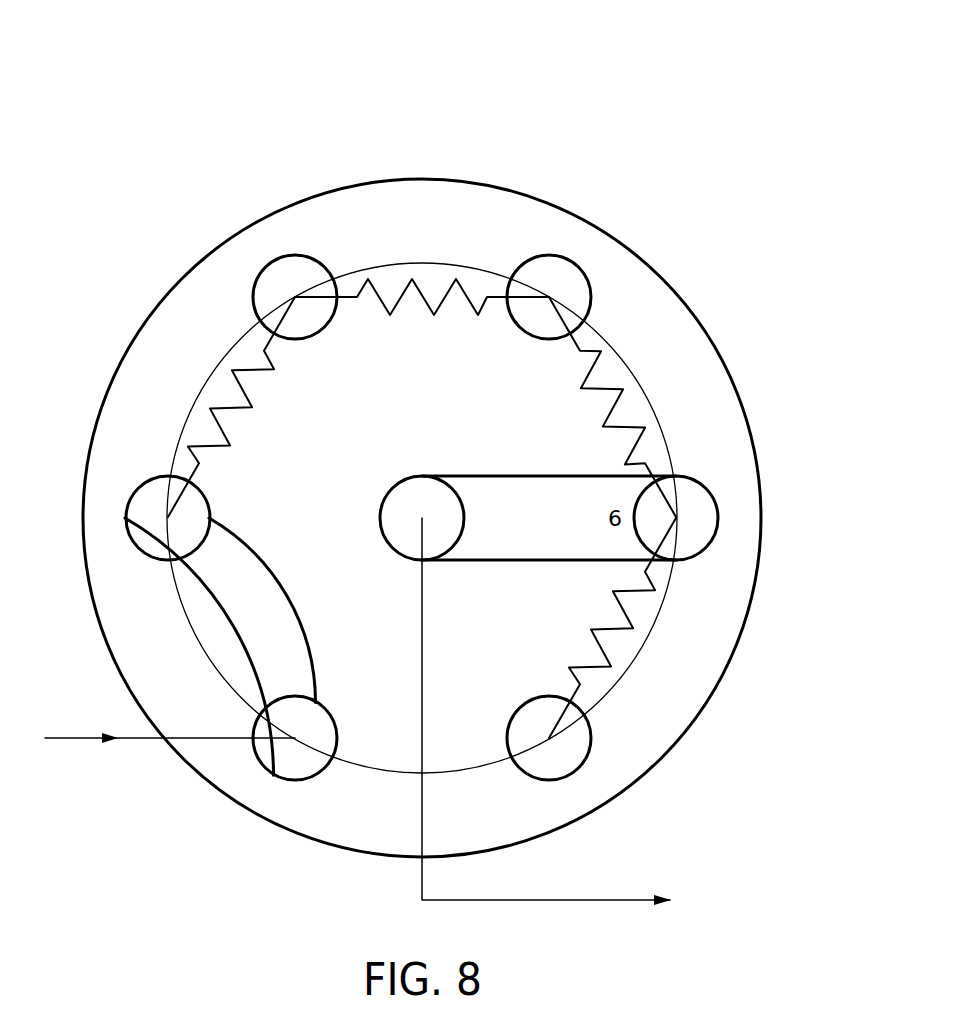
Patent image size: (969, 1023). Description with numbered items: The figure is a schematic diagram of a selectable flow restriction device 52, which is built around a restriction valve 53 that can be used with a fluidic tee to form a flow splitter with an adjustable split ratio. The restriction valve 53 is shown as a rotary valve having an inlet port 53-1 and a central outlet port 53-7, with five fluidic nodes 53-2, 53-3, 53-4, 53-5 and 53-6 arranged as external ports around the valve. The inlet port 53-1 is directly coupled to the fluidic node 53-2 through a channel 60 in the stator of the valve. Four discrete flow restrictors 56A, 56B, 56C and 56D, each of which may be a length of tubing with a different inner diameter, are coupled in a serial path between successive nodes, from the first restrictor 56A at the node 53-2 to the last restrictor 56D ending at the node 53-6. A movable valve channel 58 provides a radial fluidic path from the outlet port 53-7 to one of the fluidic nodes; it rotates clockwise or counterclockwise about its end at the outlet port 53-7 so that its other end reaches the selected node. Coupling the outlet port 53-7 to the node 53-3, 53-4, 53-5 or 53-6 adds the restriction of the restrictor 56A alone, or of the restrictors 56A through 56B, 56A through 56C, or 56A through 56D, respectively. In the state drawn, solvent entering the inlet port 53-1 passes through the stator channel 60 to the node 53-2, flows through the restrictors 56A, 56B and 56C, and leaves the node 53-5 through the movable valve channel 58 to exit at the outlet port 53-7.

The selectable flow restriction device 52 is at (422, 399).
The restriction valve 53 is at (118, 366).
The inlet port 53-1 is at (275, 777).
The fluidic node 53-2 is at (127, 518).
The fluidic node 53-3 is at (275, 262).
The fluidic node 53-4 is at (570, 262).
The fluidic node 53-5 is at (718, 518).
The fluidic node 53-6 is at (570, 777).
The outlet port 53-7 is at (380, 516).
The flow restrictor 56A is at (252, 408).
The flow restrictor 56B is at (400, 315).
The flow restrictor 56C is at (583, 380).
The flow restrictor 56D is at (590, 640).
The movable valve channel 58 is at (497, 476).
The channel 60 is at (140, 597).